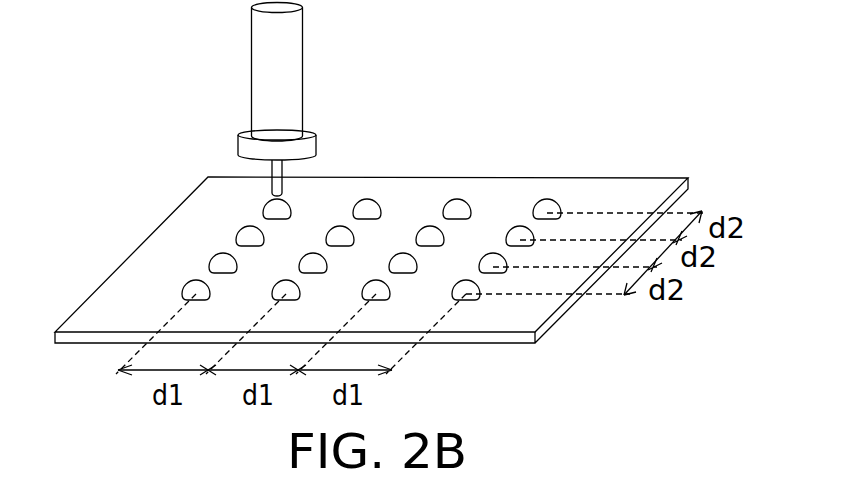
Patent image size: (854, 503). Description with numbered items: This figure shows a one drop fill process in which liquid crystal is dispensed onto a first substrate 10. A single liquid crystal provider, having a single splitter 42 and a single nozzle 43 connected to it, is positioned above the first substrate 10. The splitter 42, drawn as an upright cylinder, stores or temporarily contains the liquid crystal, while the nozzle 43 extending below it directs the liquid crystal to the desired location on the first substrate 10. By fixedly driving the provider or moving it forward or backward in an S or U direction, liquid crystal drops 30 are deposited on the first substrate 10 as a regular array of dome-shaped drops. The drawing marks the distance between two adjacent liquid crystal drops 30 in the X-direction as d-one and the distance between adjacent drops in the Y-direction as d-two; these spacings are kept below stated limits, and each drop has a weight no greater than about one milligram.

The first substrate 10 is at (634, 188).
The liquid crystal drops 30 is at (462, 197).
The splitter 42 is at (297, 37).
The nozzle 43 is at (278, 172).